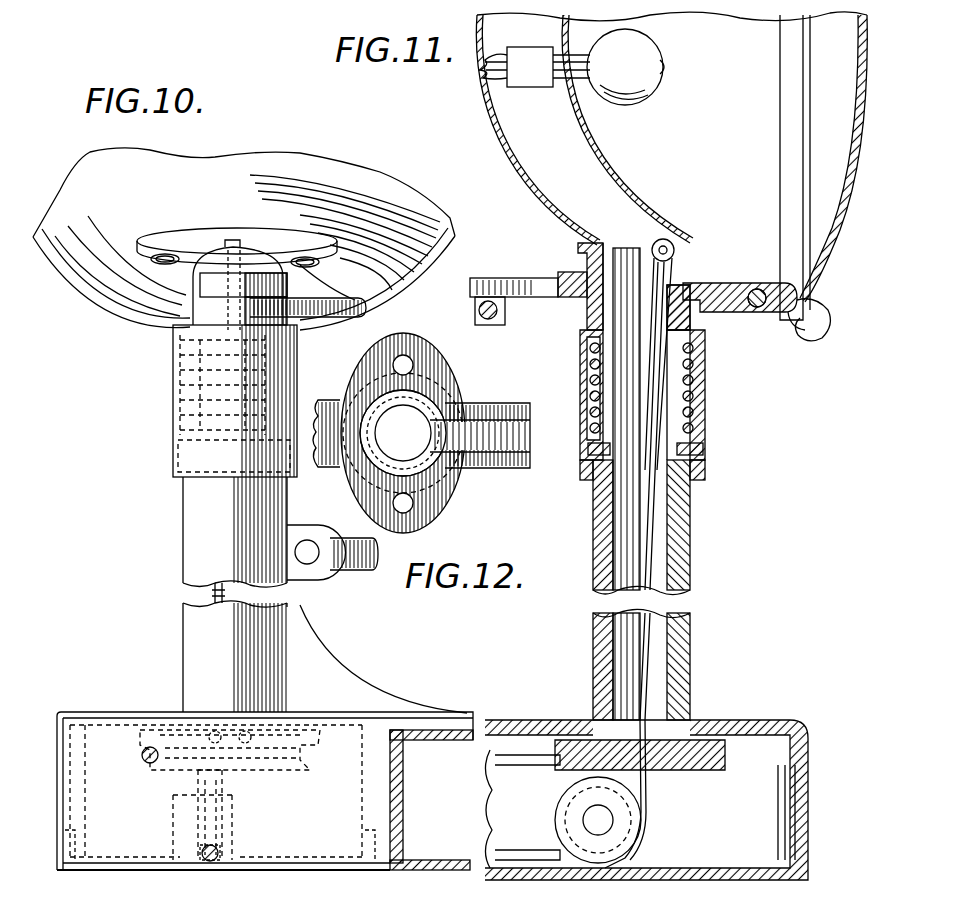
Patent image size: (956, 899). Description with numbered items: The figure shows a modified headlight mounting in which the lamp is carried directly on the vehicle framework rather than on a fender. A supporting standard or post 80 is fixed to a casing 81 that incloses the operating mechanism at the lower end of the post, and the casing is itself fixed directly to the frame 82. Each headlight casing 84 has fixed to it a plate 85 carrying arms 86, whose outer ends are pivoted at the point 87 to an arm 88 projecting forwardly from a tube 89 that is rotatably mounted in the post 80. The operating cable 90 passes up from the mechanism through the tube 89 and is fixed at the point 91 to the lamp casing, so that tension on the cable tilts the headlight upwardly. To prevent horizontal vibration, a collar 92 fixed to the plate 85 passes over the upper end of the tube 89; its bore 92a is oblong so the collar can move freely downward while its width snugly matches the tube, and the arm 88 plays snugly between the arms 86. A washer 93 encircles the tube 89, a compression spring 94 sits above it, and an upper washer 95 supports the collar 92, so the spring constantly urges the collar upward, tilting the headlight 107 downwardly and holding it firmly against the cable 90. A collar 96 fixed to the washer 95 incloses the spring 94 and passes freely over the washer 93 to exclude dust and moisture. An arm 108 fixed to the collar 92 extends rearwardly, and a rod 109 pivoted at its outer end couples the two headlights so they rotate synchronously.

In FIG. 10, the supporting standard or post 80 is at (193, 551).
In FIG. 11, the supporting standard or post 80 is at (690, 652).
In FIG. 10, the casing 81 is at (150, 695).
In FIG. 11, the casing 81 is at (757, 720).
In FIG. 10, the frame 82 is at (403, 802).
In FIG. 11, the headlight casing 84 is at (558, 193).
In FIG. 10, the plate 85 is at (330, 243).
In FIG. 12, the plate 85 is at (443, 330).
In FIG. 12, the arms 86 is at (487, 403).
In FIG. 11, the pivot point 87 is at (757, 289).
In FIG. 12, the arm 88 is at (493, 438).
In FIG. 11, the arm 88 is at (748, 300).
In FIG. 12, the tube 89 is at (430, 402).
In FIG. 11, the tube 89 is at (677, 523).
In FIG. 10, the operating cable 90 is at (220, 852).
In FIG. 11, the operating cable 90 is at (650, 557).
In FIG. 10, the cable fixing point 91 is at (204, 243).
In FIG. 11, the cable fixing point 91 is at (673, 243).
In FIG. 10, the collar 92 is at (190, 301).
In FIG. 11, the collar 92 is at (587, 310).
In FIG. 12, the bore 92a is at (365, 460).
In FIG. 11, the washer 93 is at (703, 447).
In FIG. 10, the compression spring 94 is at (172, 400).
In FIG. 11, the compression spring 94 is at (697, 410).
In FIG. 10, the washer 95 is at (175, 330).
In FIG. 11, the washer 95 is at (708, 350).
In FIG. 10, the collar 96 is at (173, 453).
In FIG. 11, the collar 96 is at (580, 473).
In FIG. 10, the headlight 107 is at (223, 884).
In FIG. 12, the arm 108 is at (330, 392).
In FIG. 11, the arm 108 is at (553, 270).
In FIG. 10, the rod 109 is at (350, 320).